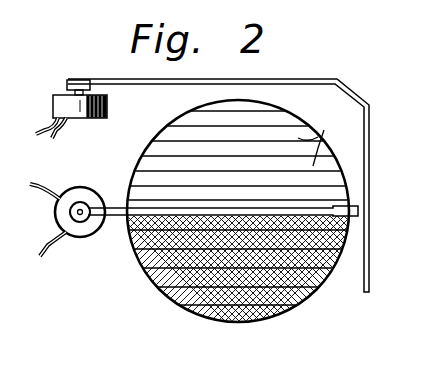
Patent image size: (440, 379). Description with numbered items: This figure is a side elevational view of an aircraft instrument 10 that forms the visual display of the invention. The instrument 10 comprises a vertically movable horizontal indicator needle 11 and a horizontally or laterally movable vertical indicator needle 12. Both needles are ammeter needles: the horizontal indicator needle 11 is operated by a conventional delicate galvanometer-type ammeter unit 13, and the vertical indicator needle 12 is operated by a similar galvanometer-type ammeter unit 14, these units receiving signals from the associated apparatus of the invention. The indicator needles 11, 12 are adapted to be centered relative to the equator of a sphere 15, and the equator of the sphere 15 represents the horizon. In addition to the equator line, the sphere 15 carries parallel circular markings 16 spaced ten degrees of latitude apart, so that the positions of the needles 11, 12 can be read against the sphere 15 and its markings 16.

The aircraft instrument 10 is at (250, 168).
The horizontal indicator needle 11 is at (117, 206).
The vertical indicator needle 12 is at (370, 253).
The ammeter unit 13 is at (78, 188).
The ammeter unit 14 is at (107, 112).
The sphere 15 is at (158, 282).
The circular markings 16 is at (318, 137).